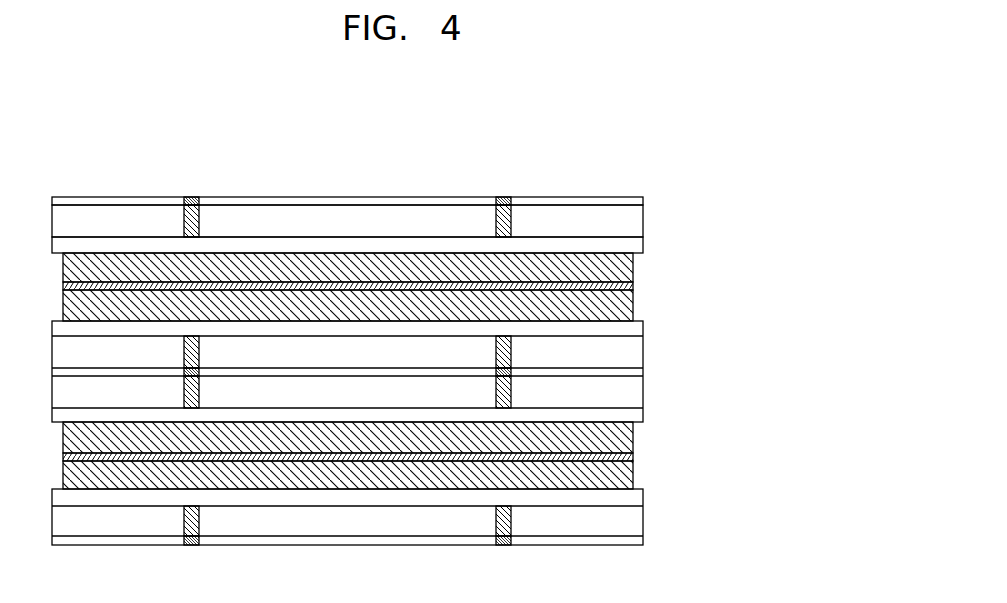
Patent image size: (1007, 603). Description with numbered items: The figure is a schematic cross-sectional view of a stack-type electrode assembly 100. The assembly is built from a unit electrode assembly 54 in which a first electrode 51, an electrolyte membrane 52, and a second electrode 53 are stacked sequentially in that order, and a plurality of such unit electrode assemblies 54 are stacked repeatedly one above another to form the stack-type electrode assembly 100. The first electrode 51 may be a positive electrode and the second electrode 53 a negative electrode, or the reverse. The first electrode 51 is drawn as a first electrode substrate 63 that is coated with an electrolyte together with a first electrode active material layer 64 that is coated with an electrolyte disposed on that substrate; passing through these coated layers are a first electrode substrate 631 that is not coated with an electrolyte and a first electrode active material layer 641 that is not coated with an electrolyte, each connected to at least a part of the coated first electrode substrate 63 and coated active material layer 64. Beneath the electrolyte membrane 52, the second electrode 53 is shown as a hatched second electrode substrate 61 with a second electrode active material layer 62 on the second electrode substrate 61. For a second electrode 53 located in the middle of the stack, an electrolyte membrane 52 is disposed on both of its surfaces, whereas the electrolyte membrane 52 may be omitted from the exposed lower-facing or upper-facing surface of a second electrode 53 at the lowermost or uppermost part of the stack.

The stack-type electrode assembly 100 is at (670, 158).
The first electrode 51 is at (717, 190).
The electrolyte membrane 52 is at (643, 246).
The second electrode 53 is at (717, 255).
The unit electrode assembly 54 is at (760, 205).
The second electrode substrate 61 is at (633, 288).
The second electrode active material layer 62 is at (633, 265).
The first electrode substrate coated with an electrolyte 63 is at (643, 201).
The first electrode active material layer coated with an electrolyte 64 is at (643, 225).
The first electrode substrate not coated with an electrolyte 631 is at (505, 197).
The first electrode active material layer not coated with an electrolyte 641 is at (511, 220).